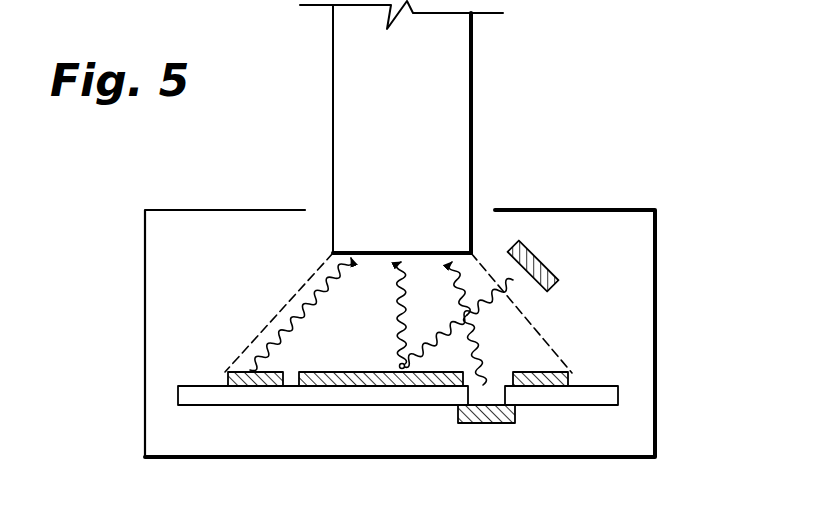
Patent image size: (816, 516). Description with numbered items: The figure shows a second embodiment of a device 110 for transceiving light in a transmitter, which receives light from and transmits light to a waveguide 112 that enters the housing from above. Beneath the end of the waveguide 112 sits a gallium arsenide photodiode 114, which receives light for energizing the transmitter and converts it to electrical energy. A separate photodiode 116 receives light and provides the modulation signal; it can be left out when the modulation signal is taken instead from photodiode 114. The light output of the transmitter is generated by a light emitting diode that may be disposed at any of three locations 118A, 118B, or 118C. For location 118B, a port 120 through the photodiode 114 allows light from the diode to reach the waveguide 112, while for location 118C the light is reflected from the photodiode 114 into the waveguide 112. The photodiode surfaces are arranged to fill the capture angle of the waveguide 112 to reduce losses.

The device 110 is at (662, 271).
The waveguide 112 is at (472, 113).
The gallium arsenide photodiode 114 is at (353, 372).
The photodiode 116 is at (572, 373).
The light emitting diode location 118A is at (227, 373).
The light emitting diode location 118B is at (490, 423).
The light emitting diode location 118C is at (549, 262).
The port 120 is at (492, 380).